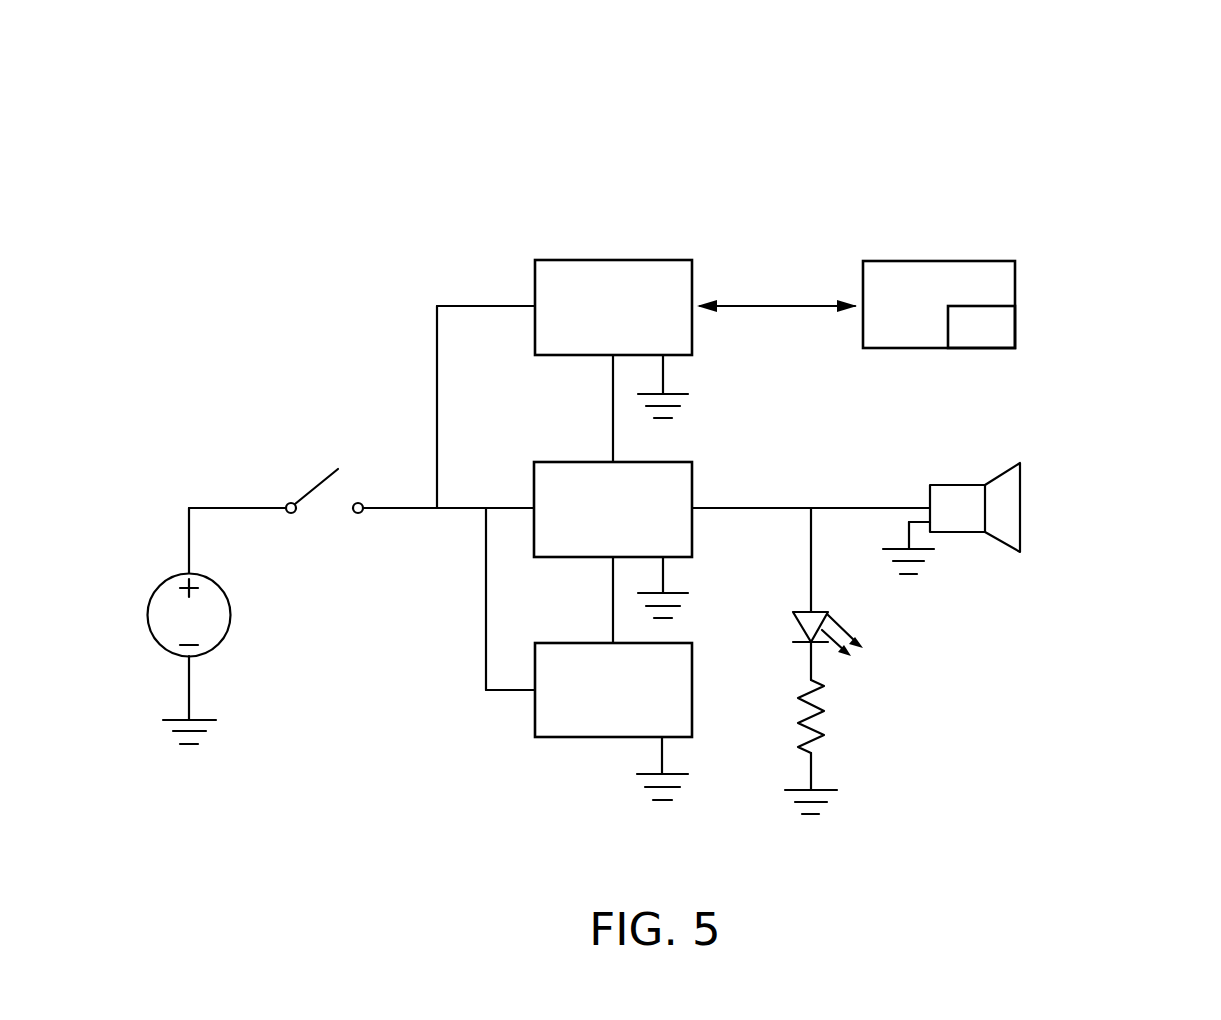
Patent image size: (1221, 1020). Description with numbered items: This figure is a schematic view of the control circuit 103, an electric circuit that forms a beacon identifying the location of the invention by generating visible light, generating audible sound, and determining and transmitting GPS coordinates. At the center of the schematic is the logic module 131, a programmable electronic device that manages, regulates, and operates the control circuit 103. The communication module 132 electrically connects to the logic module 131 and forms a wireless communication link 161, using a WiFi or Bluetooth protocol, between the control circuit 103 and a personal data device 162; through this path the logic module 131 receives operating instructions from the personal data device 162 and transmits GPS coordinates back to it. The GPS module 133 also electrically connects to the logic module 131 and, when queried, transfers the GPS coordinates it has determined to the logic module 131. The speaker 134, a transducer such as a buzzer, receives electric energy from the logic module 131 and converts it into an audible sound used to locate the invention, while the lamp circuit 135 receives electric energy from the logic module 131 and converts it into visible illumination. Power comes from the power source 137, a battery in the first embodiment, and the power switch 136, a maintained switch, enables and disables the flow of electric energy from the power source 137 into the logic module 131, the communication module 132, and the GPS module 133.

The control circuit 103 is at (1112, 138).
The logic module 131 is at (557, 472).
The communication module 132 is at (655, 283).
The GPS module 133 is at (556, 710).
The speaker 134 is at (993, 547).
The lamp circuit 135 is at (853, 663).
The power switch 136 is at (300, 492).
The power source 137 is at (231, 616).
The wireless communication link 161 is at (777, 304).
The personal data device 162 is at (970, 275).